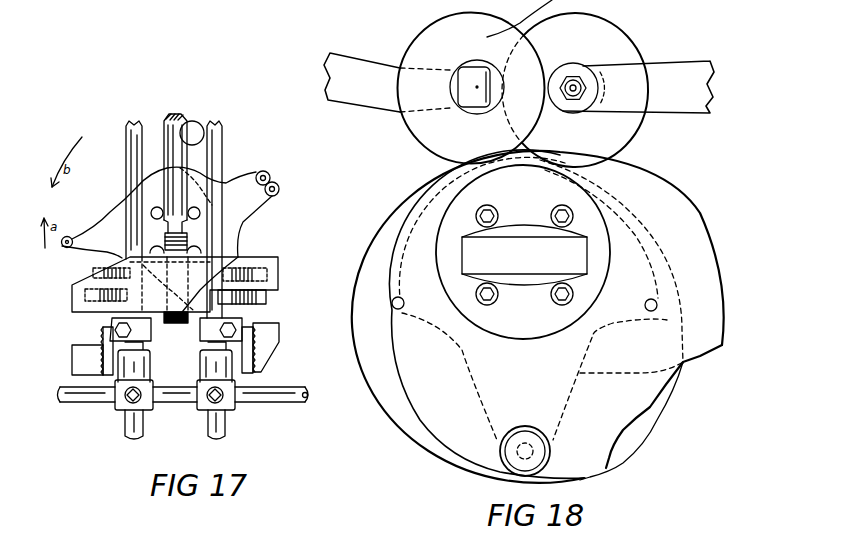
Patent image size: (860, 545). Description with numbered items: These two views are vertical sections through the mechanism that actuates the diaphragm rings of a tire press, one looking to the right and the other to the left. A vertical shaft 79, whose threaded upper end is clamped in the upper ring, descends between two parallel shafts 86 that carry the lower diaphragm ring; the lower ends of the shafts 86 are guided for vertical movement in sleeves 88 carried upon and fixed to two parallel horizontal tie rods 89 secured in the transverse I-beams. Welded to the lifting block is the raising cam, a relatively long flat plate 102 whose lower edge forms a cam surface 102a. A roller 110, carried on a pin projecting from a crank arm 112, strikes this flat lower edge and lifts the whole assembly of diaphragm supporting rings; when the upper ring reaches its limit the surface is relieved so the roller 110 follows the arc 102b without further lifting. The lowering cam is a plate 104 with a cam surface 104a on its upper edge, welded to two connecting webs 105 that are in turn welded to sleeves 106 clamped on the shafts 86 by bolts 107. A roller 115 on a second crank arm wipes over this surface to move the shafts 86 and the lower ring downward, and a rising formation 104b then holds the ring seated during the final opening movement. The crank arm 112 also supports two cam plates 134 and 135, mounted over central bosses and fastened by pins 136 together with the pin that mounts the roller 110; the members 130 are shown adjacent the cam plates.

In FIG. 17, the vertical shaft 79 is at (186, 118).
In FIG. 17, the parallel shafts 86 is at (126, 132).
In FIG. 17, the sleeves 88 is at (115, 408).
In FIG. 17, the horizontal tie rods 89 is at (305, 404).
In FIG. 17, the raising cam plate 102 is at (267, 260).
In FIG. 17, the cam surface 102a is at (267, 280).
In FIG. 17, the arc 102b is at (237, 255).
In FIG. 17, the lowering cam plate 104 is at (262, 356).
In FIG. 17, the cam surface 104a is at (90, 350).
In FIG. 17, the rising formation 104b is at (242, 326).
In FIG. 17, the connecting webs 105 is at (100, 333).
In FIG. 17, the sleeves 106 is at (212, 318).
In FIG. 17, the bolts 107 is at (100, 323).
In FIG. 18, the roller 110 is at (505, 462).
In FIG. 18, the crank arm 112 is at (670, 380).
In FIG. 17, the roller 115 is at (189, 125).
In FIG. 18, the band 130 is at (357, 67).
In FIG. 18, the cam plate 134 is at (405, 433).
In FIG. 18, the cam plate 135 is at (650, 184).
In FIG. 18, the pins 136 is at (655, 300).